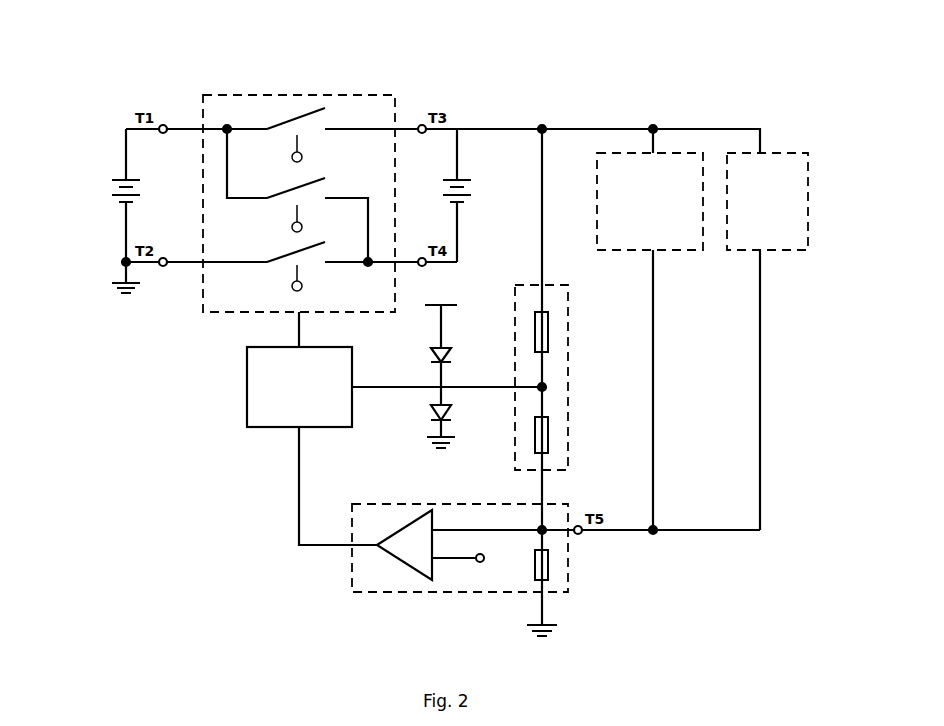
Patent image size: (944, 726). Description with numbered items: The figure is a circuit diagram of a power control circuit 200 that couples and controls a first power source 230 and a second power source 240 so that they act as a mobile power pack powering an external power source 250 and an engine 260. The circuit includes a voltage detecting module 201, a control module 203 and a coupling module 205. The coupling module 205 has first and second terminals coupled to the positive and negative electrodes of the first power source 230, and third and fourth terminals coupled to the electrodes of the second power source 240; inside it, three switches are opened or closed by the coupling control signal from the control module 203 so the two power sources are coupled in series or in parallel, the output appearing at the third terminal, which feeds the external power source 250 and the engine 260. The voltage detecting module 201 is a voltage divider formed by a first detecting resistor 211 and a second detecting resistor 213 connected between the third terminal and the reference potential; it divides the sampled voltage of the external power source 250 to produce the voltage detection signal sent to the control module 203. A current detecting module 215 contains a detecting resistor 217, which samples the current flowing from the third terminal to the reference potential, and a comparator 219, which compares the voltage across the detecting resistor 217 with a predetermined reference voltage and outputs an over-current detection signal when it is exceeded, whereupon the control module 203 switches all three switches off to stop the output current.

The power control circuit 200 is at (590, 77).
The voltage detecting module 201 is at (574, 377).
The control module 203 is at (247, 385).
The coupling module 205 is at (317, 95).
The first detecting resistor 211 is at (548, 335).
The second detecting resistor 213 is at (548, 435).
The current detecting module 215 is at (495, 579).
The detecting resistor 217 is at (552, 566).
The comparator 219 is at (420, 590).
The first power source 230 is at (118, 178).
The second power source 240 is at (467, 178).
The external power source 250 is at (670, 152).
The engine 260 is at (780, 152).